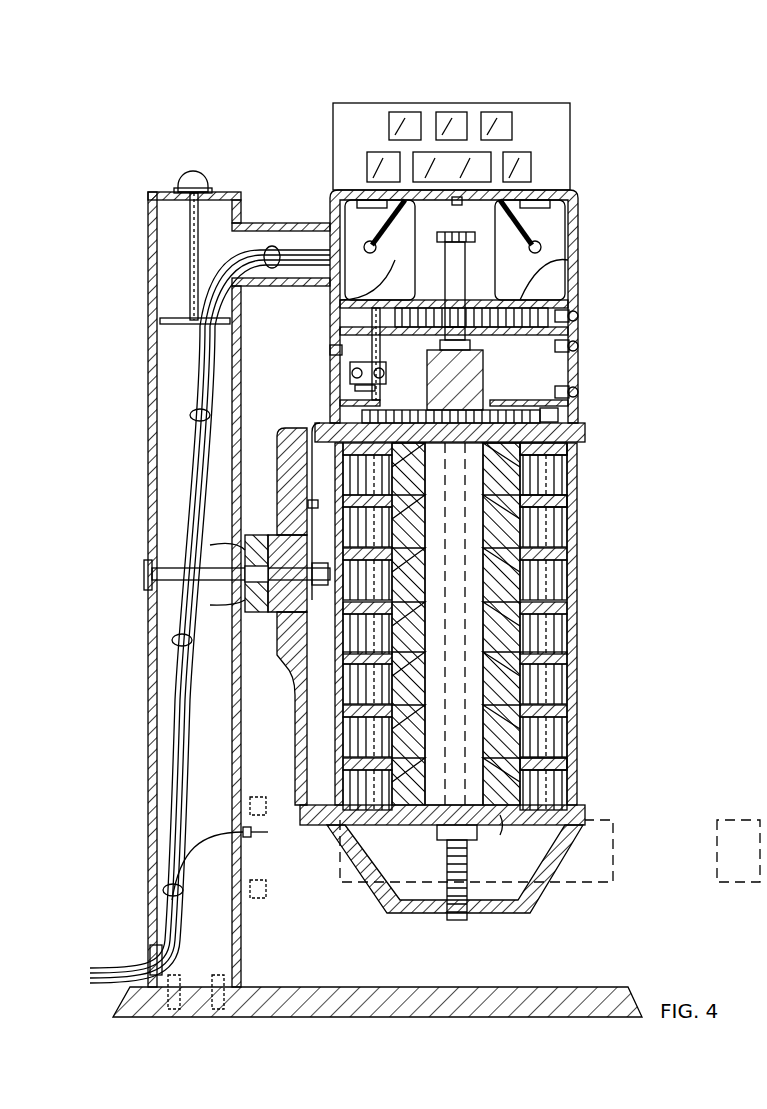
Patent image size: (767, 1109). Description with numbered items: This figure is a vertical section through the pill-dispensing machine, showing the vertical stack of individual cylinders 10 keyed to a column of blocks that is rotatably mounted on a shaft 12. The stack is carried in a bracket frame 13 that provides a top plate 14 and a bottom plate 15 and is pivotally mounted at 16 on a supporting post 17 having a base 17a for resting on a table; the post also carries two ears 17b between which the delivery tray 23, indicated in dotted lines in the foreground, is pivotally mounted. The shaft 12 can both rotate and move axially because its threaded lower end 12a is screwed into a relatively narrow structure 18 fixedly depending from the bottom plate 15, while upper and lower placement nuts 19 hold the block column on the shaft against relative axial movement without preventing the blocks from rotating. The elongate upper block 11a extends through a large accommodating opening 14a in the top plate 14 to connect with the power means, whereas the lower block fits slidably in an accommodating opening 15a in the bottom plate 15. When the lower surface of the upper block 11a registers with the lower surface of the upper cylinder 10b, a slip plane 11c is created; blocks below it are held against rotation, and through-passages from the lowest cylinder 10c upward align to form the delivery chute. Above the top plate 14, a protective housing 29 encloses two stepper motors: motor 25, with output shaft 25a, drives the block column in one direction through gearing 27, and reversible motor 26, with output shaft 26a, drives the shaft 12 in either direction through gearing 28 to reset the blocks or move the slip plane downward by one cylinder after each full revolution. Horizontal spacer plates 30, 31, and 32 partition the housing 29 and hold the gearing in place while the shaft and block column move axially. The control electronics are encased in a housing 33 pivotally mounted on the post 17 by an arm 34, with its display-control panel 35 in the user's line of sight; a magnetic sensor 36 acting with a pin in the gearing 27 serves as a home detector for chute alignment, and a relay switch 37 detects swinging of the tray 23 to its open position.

The cylinder 10 is at (578, 523).
The upper cylinder 10b is at (578, 468).
The lowest cylinder 10c is at (578, 765).
The upper block 11a is at (483, 375).
The slip plane 11c is at (578, 492).
The shaft 12 is at (445, 282).
The lower end of shaft 12a is at (447, 870).
The bracket frame 13 is at (297, 428).
The top plate 14 is at (585, 435).
The accommodating opening 14a is at (580, 388).
The bottom plate 15 is at (585, 815).
The accommodating opening 15a is at (500, 830).
The pivot mounting 16 is at (148, 582).
The supporting post 17 is at (148, 496).
The base 17a is at (606, 987).
The ears 17b is at (258, 797).
The narrow structure 18 is at (540, 895).
The placement nuts 19 is at (483, 352).
The delivery tray 23 is at (613, 868).
The stepper motor 25 is at (335, 210).
The output shaft 25a is at (340, 342).
The reversible motor 26 is at (578, 196).
The output shaft 26a is at (575, 300).
The gearing 27 is at (385, 392).
The gearing 28 is at (545, 258).
The protective housing 29 is at (578, 218).
The spacer plate 30 is at (575, 290).
The spacer plate 31 is at (578, 338).
The spacer plate 32 is at (578, 408).
The housing 33 is at (333, 122).
The arm 34 is at (280, 223).
The display-control panel 35 is at (570, 132).
The magnetic sensor 36 is at (560, 416).
The relay switch 37 is at (255, 836).